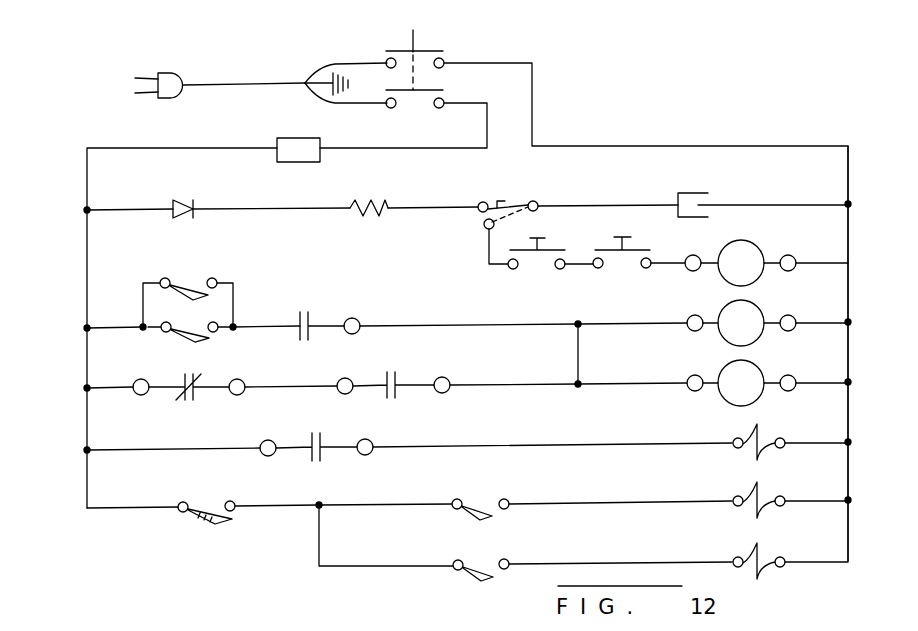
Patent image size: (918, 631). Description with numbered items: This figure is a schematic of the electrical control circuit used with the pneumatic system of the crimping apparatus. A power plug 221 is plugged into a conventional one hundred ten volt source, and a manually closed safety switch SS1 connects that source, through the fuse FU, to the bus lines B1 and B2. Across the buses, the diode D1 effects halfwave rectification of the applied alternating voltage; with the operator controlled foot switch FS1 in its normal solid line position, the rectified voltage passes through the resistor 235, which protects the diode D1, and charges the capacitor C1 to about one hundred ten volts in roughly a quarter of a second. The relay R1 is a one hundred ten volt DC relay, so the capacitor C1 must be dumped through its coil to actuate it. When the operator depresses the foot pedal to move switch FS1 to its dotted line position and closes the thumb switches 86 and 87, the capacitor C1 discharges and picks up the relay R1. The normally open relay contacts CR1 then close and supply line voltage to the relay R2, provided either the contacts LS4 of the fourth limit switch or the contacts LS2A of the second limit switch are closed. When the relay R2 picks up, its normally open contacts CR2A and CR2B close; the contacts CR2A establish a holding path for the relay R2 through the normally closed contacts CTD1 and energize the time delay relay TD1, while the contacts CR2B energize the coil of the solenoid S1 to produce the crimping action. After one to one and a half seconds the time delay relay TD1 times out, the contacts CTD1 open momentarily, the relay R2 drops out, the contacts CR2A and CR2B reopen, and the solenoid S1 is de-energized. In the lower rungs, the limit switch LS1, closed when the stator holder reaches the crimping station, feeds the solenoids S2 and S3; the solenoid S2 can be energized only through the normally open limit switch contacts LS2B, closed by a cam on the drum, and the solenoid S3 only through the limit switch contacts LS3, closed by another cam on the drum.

The power plug 221 is at (168, 73).
The safety switch SS1 is at (430, 52).
The fuse FU is at (300, 138).
The bus line B1 is at (87, 173).
The bus line B2 is at (848, 172).
The diode D1 is at (191, 200).
The resistor 235 is at (370, 199).
The foot switch FS1 is at (512, 203).
The capacitor C1 is at (697, 193).
The thumb switch 86 is at (546, 249).
The thumb switch 87 is at (630, 249).
The relay R1 is at (753, 244).
The limit switch contacts LS4 is at (200, 282).
The relay contacts CR1 is at (308, 313).
The relay R2 is at (760, 308).
The limit switch contacts LS2A is at (205, 337).
The time delay relay contacts CTD1 is at (190, 375).
The relay contacts CR2A is at (395, 372).
The time delay relay TD1 is at (762, 368).
The relay contacts CR2B is at (318, 433).
The solenoid S1 is at (765, 432).
The limit switch LS1 is at (213, 502).
The limit switch contacts LS2B is at (485, 500).
The solenoid S2 is at (764, 493).
The limit switch contacts LS3 is at (486, 560).
The solenoid S3 is at (765, 555).